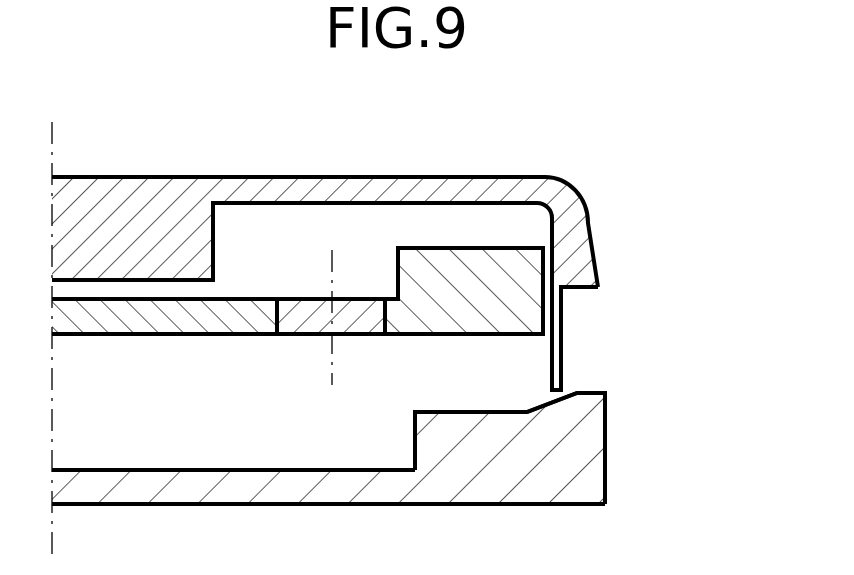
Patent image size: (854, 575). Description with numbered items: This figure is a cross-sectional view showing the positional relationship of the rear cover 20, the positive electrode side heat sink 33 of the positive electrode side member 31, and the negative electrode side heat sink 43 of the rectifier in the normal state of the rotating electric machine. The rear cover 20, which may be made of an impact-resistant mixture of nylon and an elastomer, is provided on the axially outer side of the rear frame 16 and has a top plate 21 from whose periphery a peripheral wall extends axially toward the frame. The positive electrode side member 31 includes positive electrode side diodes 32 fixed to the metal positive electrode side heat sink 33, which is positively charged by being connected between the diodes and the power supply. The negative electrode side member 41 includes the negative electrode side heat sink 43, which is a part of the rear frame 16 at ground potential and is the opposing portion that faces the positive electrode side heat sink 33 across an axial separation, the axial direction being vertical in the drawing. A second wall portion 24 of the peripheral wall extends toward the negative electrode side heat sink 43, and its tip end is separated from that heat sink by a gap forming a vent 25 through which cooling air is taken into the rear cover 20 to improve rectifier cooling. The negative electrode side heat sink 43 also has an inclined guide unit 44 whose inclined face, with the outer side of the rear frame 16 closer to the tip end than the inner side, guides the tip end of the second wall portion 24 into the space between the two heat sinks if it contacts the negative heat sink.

The rear frame 16 is at (320, 505).
The rear cover 20 is at (83, 177).
The top plate 21 is at (264, 177).
The second wall portion 24 is at (565, 341).
The vent 25 is at (550, 402).
The positive electrode side member 31 is at (498, 131).
The positive electrode side diode 32 is at (365, 299).
The positive electrode side heat sink 33 is at (497, 248).
The negative electrode side member 41 is at (568, 432).
The negative electrode side heat sink 43 is at (605, 467).
The inclined guide unit 44 is at (571, 393).